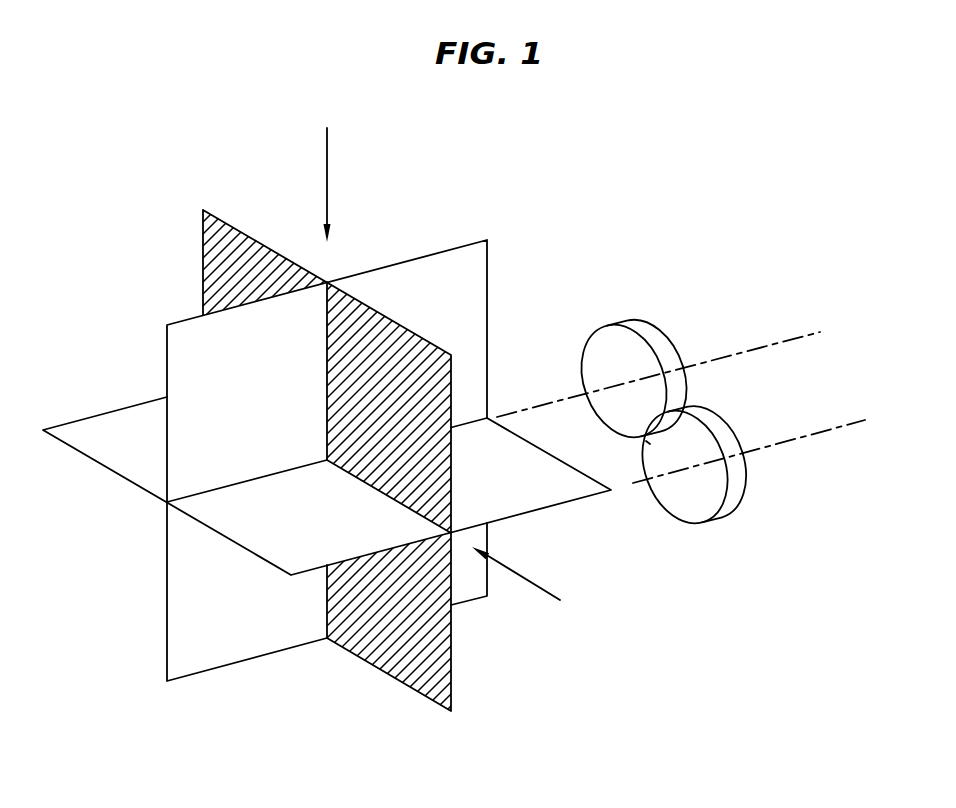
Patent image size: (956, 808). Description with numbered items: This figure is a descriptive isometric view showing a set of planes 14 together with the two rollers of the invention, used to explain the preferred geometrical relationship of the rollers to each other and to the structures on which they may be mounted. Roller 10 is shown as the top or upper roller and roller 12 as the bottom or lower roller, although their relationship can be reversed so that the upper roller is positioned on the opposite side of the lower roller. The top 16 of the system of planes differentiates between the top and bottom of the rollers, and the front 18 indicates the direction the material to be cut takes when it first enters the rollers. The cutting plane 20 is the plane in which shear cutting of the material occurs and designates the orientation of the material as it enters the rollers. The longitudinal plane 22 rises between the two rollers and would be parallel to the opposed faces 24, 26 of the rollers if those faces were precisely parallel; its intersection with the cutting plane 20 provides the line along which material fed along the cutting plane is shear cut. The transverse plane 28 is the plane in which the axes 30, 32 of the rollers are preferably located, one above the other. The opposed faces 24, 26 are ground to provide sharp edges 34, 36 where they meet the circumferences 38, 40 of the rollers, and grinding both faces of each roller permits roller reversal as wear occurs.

The roller 10 is at (667, 353).
The roller 12 is at (727, 487).
The set of planes 14 is at (478, 477).
The top 16 is at (328, 185).
The front 18 is at (543, 583).
The cutting plane 20 is at (315, 534).
The longitudinal plane 22 is at (383, 672).
The opposed face 24 is at (692, 379).
The opposed face 26 is at (648, 443).
The transverse plane 28 is at (452, 302).
The axis 30 is at (787, 339).
The axis 32 is at (838, 425).
The sharp edge 34 is at (660, 330).
The sharp edge 36 is at (728, 519).
The circumference 38 is at (637, 322).
The circumference 40 is at (733, 472).